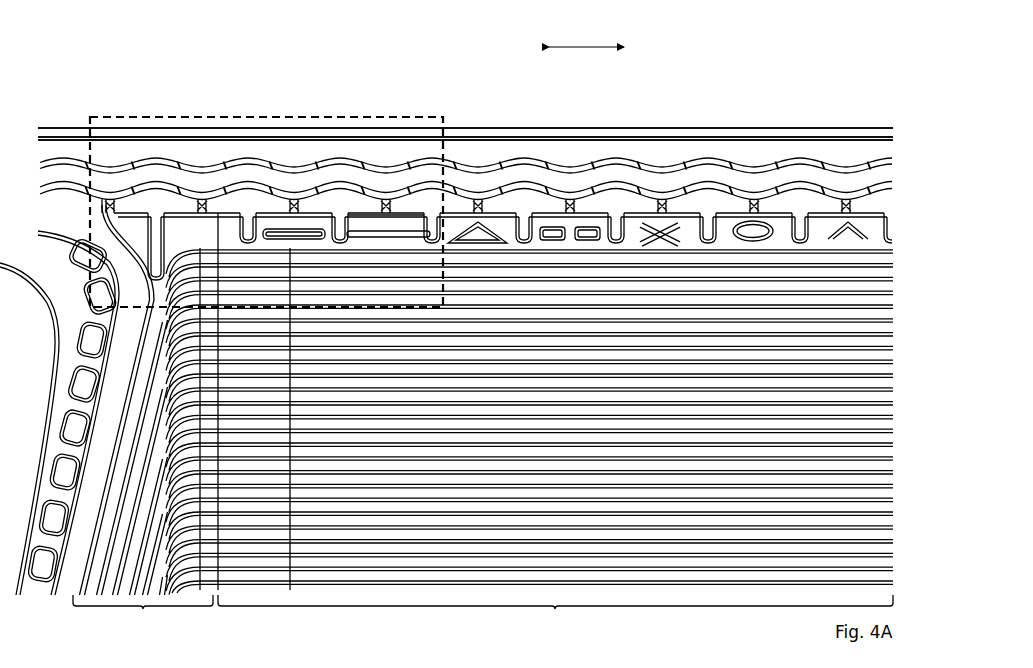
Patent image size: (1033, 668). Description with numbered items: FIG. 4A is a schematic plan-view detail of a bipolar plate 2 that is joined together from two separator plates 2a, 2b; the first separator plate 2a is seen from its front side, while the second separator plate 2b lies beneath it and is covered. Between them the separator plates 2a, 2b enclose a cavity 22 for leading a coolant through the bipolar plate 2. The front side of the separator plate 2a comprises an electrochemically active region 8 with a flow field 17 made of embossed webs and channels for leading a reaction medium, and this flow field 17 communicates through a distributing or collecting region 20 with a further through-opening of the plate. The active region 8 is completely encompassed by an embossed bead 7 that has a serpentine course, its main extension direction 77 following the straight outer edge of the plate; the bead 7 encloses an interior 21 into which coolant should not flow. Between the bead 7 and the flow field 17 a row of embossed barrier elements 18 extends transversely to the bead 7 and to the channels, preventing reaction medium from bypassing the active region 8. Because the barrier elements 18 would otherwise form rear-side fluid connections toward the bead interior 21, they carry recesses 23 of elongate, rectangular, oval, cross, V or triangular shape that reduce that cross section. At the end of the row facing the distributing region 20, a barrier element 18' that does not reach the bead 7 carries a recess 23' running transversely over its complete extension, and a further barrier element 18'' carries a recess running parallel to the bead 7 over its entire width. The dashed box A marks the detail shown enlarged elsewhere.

The bipolar plate 2 is at (858, 90).
The first separator plate 2a is at (862, 127).
The second separator plate 2b is at (806, 122).
The bead 7 is at (66, 162).
The electrochemically active region 8 is at (555, 444).
The flow field 17 is at (896, 494).
The barrier elements 18 is at (498, 174).
The barrier element 18' is at (171, 148).
The barrier element 18'' is at (386, 144).
The distributing or collecting region 20 is at (106, 436).
The bead interior 21 is at (60, 176).
The cavity 22 is at (897, 335).
The recesses 23 is at (590, 160).
The recess 23' is at (237, 327).
The main extension direction 77 is at (587, 44).
The detail region A is at (445, 117).